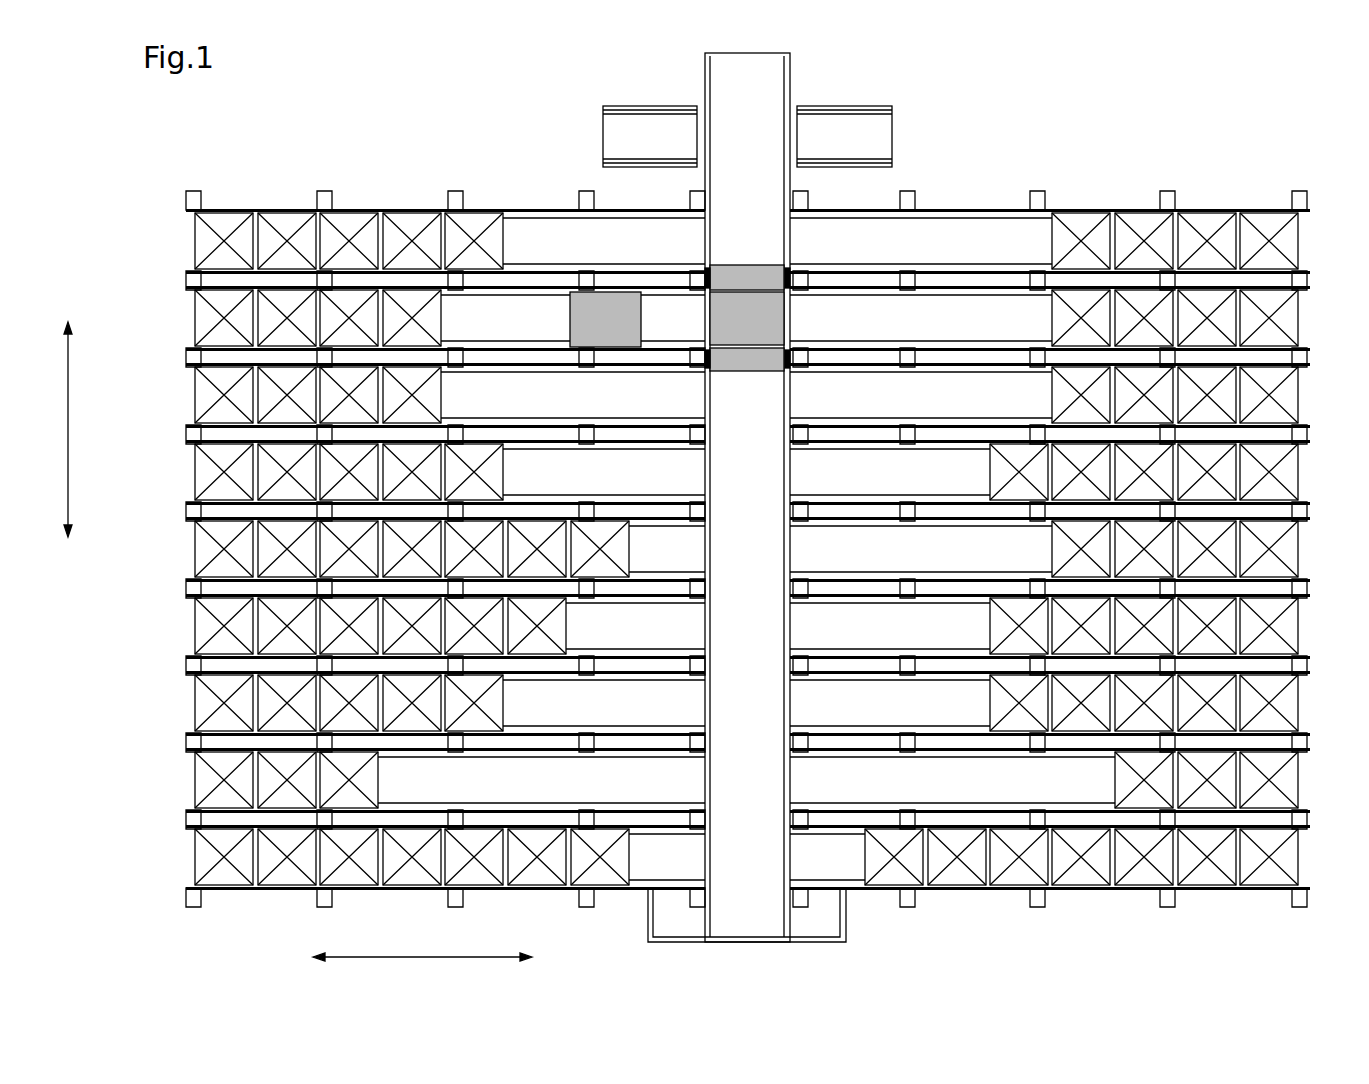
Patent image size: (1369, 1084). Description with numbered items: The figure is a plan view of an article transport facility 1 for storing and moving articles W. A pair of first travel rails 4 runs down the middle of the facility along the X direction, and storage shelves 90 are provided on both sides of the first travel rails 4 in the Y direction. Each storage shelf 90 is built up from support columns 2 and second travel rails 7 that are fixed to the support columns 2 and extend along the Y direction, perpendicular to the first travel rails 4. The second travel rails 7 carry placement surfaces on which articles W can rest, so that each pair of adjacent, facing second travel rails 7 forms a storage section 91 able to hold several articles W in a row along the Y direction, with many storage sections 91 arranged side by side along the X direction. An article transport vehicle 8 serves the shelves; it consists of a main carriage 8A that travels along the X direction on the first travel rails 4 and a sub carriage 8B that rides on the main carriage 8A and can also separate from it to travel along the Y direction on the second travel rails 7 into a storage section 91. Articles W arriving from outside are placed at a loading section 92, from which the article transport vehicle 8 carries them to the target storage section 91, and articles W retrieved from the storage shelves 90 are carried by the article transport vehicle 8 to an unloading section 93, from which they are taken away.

The article transport facility 1 is at (84, 159).
The storage shelf 90 is at (352, 195).
The support column 2 is at (188, 430).
The second travel rail 7 is at (982, 575).
The article W is at (1263, 212).
The first travel rail 4 is at (712, 562).
The article transport vehicle 8 is at (655, 268).
The main carriage 8A is at (740, 268).
The sub carriage 8B is at (585, 300).
The storage section 91 is at (689, 458).
The loading section 92 is at (855, 120).
The unloading section 93 is at (630, 122).